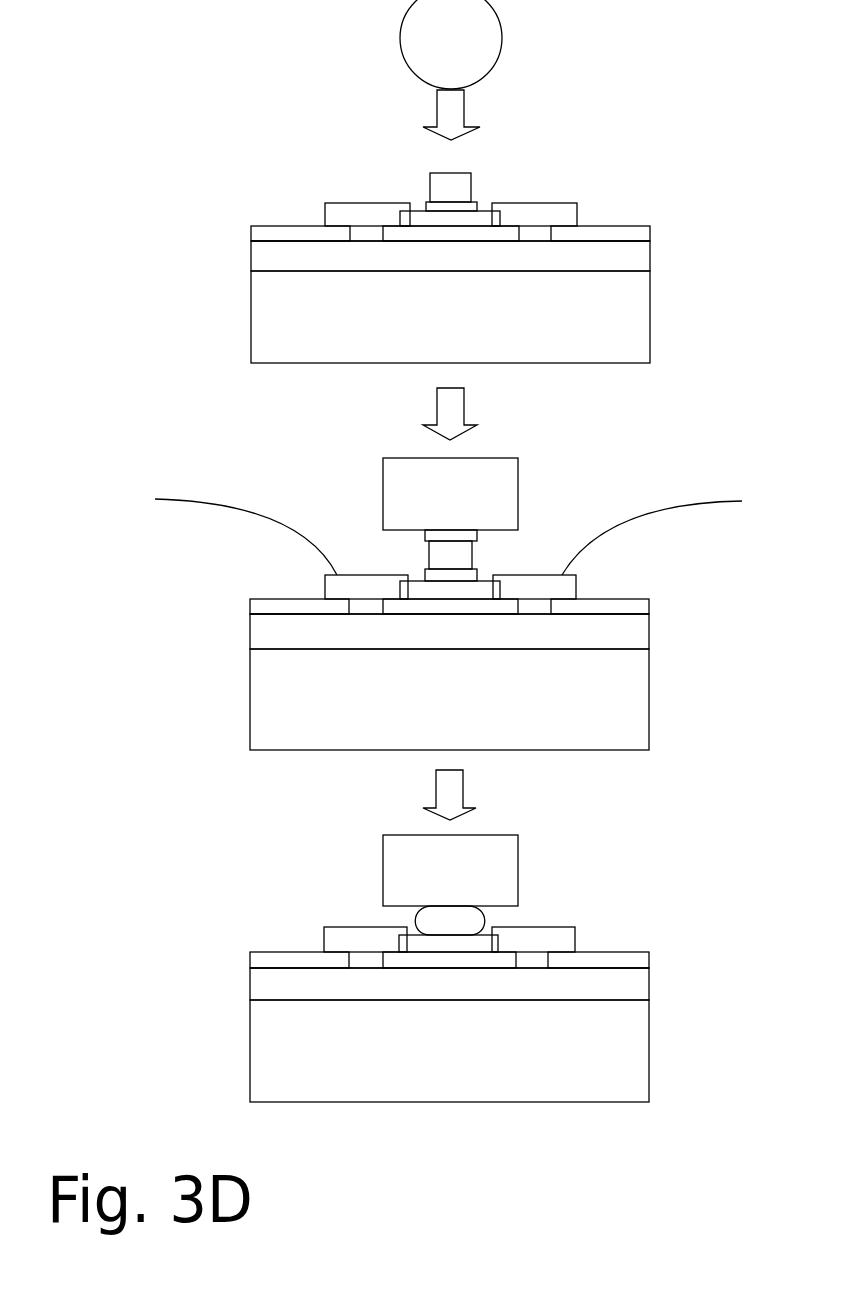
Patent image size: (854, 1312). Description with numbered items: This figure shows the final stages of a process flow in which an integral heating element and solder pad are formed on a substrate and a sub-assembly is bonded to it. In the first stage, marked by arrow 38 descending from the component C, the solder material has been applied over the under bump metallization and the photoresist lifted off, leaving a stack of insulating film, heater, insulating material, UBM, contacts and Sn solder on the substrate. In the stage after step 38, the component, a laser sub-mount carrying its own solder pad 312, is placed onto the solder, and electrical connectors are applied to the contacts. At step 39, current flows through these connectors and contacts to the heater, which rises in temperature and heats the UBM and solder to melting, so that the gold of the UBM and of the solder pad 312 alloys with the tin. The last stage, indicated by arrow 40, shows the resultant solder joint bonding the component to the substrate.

The chip / die C is at (451, 44).
The step 38 is at (424, 127).
The step 39 is at (424, 425).
The process step arrow 40 is at (424, 808).
The solder pad 312 is at (425, 533).